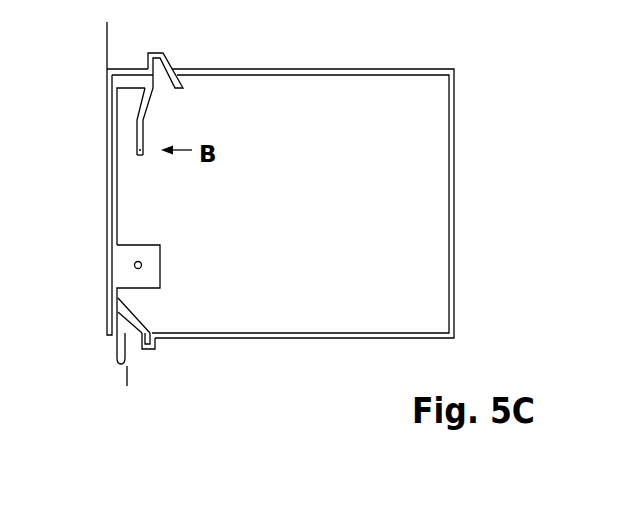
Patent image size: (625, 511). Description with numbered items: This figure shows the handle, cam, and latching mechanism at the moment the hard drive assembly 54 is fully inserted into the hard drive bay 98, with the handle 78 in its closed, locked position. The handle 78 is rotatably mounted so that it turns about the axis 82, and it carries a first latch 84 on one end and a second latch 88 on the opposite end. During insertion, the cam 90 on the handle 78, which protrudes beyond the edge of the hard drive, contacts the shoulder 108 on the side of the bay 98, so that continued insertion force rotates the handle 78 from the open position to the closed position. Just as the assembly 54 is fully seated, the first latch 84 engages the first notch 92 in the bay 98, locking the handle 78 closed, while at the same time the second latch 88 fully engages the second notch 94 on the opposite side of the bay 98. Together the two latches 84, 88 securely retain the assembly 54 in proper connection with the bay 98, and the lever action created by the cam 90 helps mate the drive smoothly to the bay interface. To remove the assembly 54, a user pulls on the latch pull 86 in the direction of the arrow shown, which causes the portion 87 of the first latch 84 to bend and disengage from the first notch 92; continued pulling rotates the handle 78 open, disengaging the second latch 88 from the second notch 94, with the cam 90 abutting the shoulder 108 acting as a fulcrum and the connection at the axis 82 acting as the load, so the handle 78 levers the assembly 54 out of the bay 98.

The hard drive assembly 54 is at (377, 213).
The handle 78 is at (116, 152).
The axis 82 is at (142, 264).
The first latch 84 is at (162, 78).
The latch pull 86 is at (141, 158).
The portion of latch 87 is at (125, 86).
The second latch 88 is at (155, 330).
The cam 90 is at (114, 360).
The first notch 92 is at (171, 63).
The second notch 94 is at (149, 351).
The hard drive bay 98 is at (456, 172).
The shoulder 108 is at (127, 368).